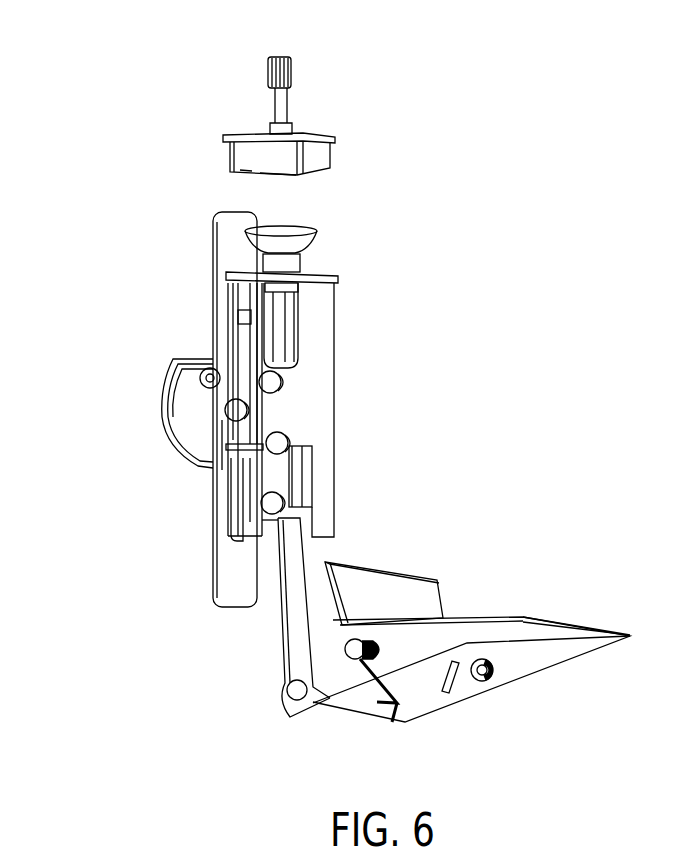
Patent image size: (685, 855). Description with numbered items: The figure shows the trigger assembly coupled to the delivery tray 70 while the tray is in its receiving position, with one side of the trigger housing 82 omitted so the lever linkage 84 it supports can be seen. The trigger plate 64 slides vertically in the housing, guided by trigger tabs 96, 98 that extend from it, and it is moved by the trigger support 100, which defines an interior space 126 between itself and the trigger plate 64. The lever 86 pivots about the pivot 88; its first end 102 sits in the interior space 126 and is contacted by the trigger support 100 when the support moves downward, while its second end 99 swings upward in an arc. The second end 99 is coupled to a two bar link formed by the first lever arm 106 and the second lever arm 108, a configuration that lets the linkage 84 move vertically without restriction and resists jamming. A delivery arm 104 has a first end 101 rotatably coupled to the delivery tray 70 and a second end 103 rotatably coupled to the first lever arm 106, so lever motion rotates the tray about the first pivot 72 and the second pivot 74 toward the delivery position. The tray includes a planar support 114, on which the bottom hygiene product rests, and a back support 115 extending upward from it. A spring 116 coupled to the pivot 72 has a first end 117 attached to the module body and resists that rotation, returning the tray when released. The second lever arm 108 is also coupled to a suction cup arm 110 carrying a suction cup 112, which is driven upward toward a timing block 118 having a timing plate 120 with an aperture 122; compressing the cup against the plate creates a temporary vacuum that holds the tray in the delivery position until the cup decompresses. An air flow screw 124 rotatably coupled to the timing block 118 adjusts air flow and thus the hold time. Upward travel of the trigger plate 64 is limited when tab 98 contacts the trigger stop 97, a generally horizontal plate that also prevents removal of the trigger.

The trigger plate 64 is at (235, 593).
The delivery tray 70 is at (620, 625).
The first pivot 72 is at (487, 677).
The second pivot 74 is at (355, 656).
The trigger housing 82 is at (315, 322).
The lever linkage 84 is at (318, 548).
The lever 86 is at (228, 440).
The pivot 88 is at (275, 383).
The trigger tab 96 is at (228, 320).
The trigger stop 97 is at (224, 460).
The trigger tab 98 is at (221, 490).
The second end 99 is at (303, 440).
The trigger support 100 is at (174, 360).
The first end 101 is at (275, 707).
The first end 102 is at (209, 379).
The second end 103 is at (285, 532).
The delivery arm 104 is at (283, 632).
The first lever arm 106 is at (290, 484).
The second lever arm 108 is at (278, 413).
The suction cup arm 110 is at (292, 316).
The suction cup 112 is at (293, 238).
The planar support 114 is at (557, 612).
The back support 115 is at (432, 590).
The spring 116 is at (420, 694).
The first end 117 is at (396, 716).
The timing block 118 is at (331, 152).
The timing plate 120 is at (232, 171).
The aperture 122 is at (316, 190).
The air flow screw 124 is at (289, 71).
The interior space 126 is at (190, 428).